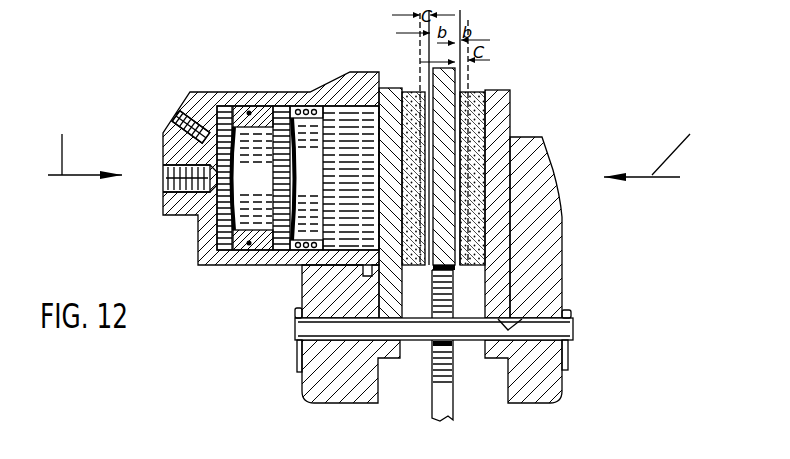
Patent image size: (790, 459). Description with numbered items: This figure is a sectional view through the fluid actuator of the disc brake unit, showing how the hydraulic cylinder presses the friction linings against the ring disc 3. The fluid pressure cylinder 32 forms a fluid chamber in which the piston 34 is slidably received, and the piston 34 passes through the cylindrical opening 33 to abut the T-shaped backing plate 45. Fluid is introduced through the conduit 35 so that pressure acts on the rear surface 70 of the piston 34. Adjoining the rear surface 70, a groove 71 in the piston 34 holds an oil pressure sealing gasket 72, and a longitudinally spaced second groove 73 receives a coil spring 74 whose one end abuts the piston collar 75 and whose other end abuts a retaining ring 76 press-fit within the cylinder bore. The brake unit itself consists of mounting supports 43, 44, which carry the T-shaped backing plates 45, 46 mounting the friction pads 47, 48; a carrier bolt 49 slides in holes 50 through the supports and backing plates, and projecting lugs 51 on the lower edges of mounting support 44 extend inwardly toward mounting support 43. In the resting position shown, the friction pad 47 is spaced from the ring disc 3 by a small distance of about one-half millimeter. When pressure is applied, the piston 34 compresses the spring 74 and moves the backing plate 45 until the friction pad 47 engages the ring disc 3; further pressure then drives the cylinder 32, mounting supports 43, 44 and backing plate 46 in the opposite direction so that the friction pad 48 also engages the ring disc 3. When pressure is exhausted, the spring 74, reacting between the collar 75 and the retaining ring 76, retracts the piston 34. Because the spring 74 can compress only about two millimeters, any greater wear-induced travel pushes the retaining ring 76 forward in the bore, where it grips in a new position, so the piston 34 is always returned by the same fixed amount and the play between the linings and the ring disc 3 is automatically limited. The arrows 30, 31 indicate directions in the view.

The ring disc 3 is at (447, 89).
The light incidence direction arrow 30 is at (83, 145).
The light direction arrow 31 is at (661, 146).
The fluid pressure cylinder 32 is at (228, 100).
The cylindrical opening 33 is at (302, 290).
The piston 34 is at (343, 120).
The conduit 35 is at (163, 187).
The mounting support 43 is at (315, 378).
The mounting support 44 is at (562, 222).
The T-shaped backing plate 45 is at (388, 94).
The T-shaped backing plate 46 is at (498, 113).
The friction pad 47 is at (413, 98).
The friction pad 48 is at (475, 108).
The carrier bolt 49 is at (565, 325).
The holes 50 is at (320, 317).
The projecting lugs 51 is at (470, 390).
The rear surface 70 is at (217, 232).
The groove 71 is at (240, 250).
The oil pressure sealing gasket 72 is at (260, 250).
The second groove 73 is at (309, 115).
The coil spring 74 is at (288, 107).
The piston collar 75 is at (280, 160).
The retaining ring 76 is at (315, 103).